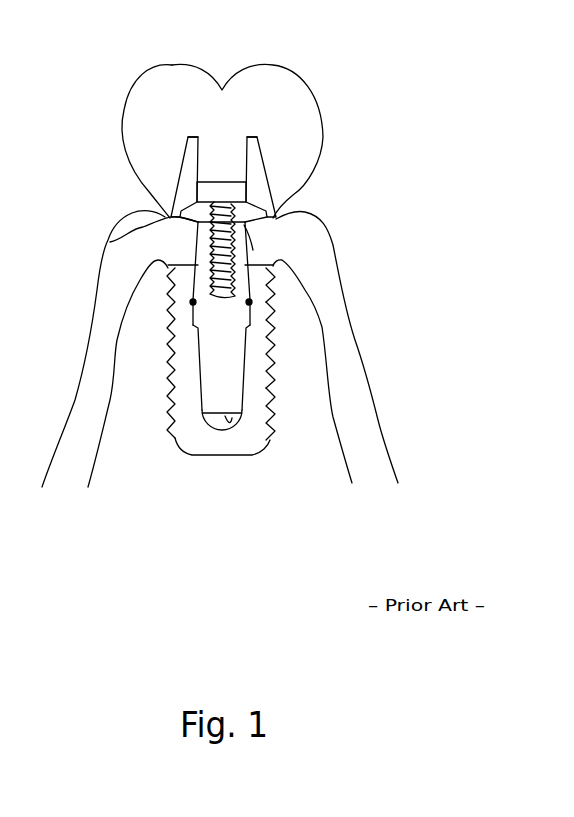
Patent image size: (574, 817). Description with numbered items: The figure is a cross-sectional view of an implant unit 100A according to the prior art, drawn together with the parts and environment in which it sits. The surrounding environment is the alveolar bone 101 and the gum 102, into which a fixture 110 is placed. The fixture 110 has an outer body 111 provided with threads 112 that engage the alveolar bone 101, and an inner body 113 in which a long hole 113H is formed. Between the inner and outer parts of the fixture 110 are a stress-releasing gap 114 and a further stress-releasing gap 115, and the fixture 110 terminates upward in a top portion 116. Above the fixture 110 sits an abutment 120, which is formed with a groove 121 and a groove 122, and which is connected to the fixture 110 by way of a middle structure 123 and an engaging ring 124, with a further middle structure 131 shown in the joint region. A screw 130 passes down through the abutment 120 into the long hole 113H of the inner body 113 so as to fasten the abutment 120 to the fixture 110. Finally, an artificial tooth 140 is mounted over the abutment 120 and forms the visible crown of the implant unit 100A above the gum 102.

The implant unit 100A is at (337, 90).
The artificial tooth 140 is at (142, 107).
The screw 130 is at (205, 188).
The abutment 120 is at (260, 188).
The groove 121 is at (243, 164).
The groove 122 is at (253, 250).
The top portion 116 is at (110, 242).
The middle structure 131 is at (193, 265).
The engaging ring 124 is at (193, 302).
The stress-releasing gap 114 is at (248, 263).
The middle structure 123 is at (228, 353).
The long hole 113H is at (228, 423).
The inner body 113 is at (192, 358).
The stress-releasing gap 115 is at (263, 297).
The outer body 111 is at (267, 318).
The threads 112 is at (272, 412).
The fixture 110 is at (188, 455).
The alveolar bone 101 is at (305, 448).
The gum 102 is at (372, 460).